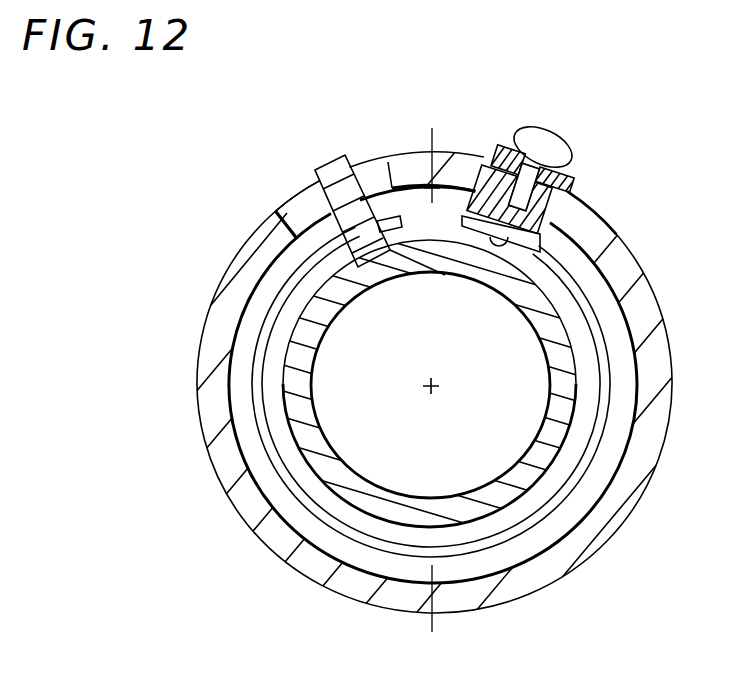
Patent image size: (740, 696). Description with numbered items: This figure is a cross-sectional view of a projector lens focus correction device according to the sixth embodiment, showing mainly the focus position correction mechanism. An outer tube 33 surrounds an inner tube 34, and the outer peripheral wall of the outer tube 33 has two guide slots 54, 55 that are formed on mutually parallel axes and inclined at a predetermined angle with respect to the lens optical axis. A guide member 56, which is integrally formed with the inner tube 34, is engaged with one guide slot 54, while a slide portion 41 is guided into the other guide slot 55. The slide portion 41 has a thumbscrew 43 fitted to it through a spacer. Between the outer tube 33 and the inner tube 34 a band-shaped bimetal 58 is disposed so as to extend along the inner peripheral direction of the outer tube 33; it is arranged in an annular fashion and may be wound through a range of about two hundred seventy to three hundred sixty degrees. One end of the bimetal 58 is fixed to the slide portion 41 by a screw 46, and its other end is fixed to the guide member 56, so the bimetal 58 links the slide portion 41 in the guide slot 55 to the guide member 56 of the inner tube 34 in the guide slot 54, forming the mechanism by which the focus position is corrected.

The outer tube 33 is at (607, 522).
The inner tube 34 is at (505, 492).
The slide portion 41 is at (548, 217).
The thumbscrew 43 is at (540, 138).
The screw 46 is at (504, 247).
The guide slot 54 is at (288, 212).
The guide slot 55 is at (453, 185).
The guide member 56 is at (337, 166).
The band-shaped bimetal 58 is at (258, 407).